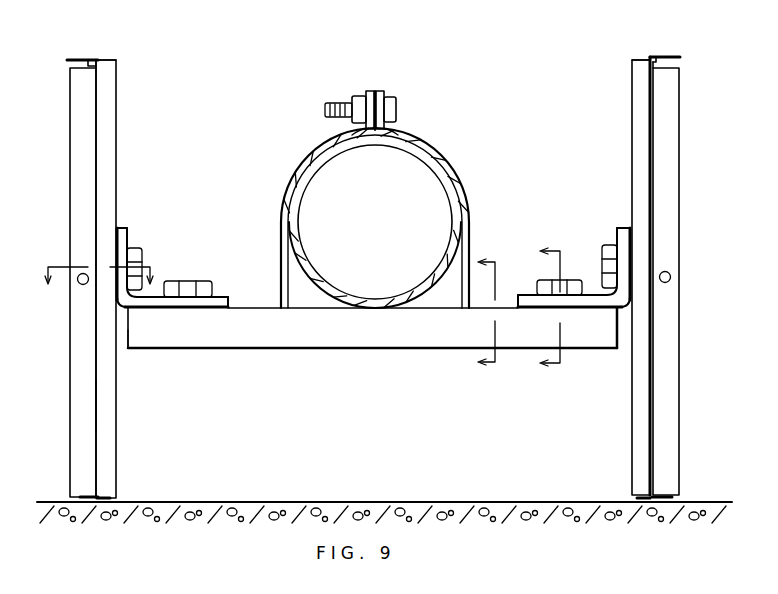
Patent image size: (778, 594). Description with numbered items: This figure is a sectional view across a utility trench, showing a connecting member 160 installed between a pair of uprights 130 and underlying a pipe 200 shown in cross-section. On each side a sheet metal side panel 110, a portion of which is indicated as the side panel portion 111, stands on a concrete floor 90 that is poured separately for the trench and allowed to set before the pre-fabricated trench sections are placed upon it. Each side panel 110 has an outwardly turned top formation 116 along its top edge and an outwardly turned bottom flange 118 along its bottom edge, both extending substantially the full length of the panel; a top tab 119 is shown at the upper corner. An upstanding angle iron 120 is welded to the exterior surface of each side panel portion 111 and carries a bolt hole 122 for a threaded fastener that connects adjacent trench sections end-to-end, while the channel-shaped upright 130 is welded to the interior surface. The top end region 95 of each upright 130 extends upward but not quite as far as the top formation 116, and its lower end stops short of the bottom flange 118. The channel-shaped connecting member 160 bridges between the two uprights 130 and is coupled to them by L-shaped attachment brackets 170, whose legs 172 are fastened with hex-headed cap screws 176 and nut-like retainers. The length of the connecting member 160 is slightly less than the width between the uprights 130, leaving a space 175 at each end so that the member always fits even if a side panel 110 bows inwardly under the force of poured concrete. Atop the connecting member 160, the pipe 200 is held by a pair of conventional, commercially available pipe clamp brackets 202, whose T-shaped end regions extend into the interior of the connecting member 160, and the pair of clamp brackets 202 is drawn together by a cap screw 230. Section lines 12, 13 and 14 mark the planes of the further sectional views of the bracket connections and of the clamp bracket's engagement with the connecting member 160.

The concrete floor 90 is at (318, 501).
The top end region 95 is at (103, 55).
The side panel 110 is at (120, 70).
The side panel portion 111 is at (97, 402).
The outwardly turned top formation 116 is at (90, 56).
The outwardly turned bottom flange 118 is at (86, 492).
The top tab 119 is at (70, 59).
The angle iron 120 is at (80, 168).
The bolt hole 122 is at (80, 286).
The upright 130 is at (104, 130).
The connecting member 160 is at (425, 346).
The L-shaped attachment bracket 170 is at (176, 292).
The bracket leg 172 is at (119, 230).
The space 175 is at (121, 348).
The hex-headed cap screw 176 is at (141, 258).
The pipe 200 is at (328, 306).
The pipe clamp bracket 202 is at (316, 148).
The cap screw 230 is at (333, 100).
The section line 12 is at (100, 273).
The section line 13 is at (551, 305).
The section line 14 is at (485, 310).